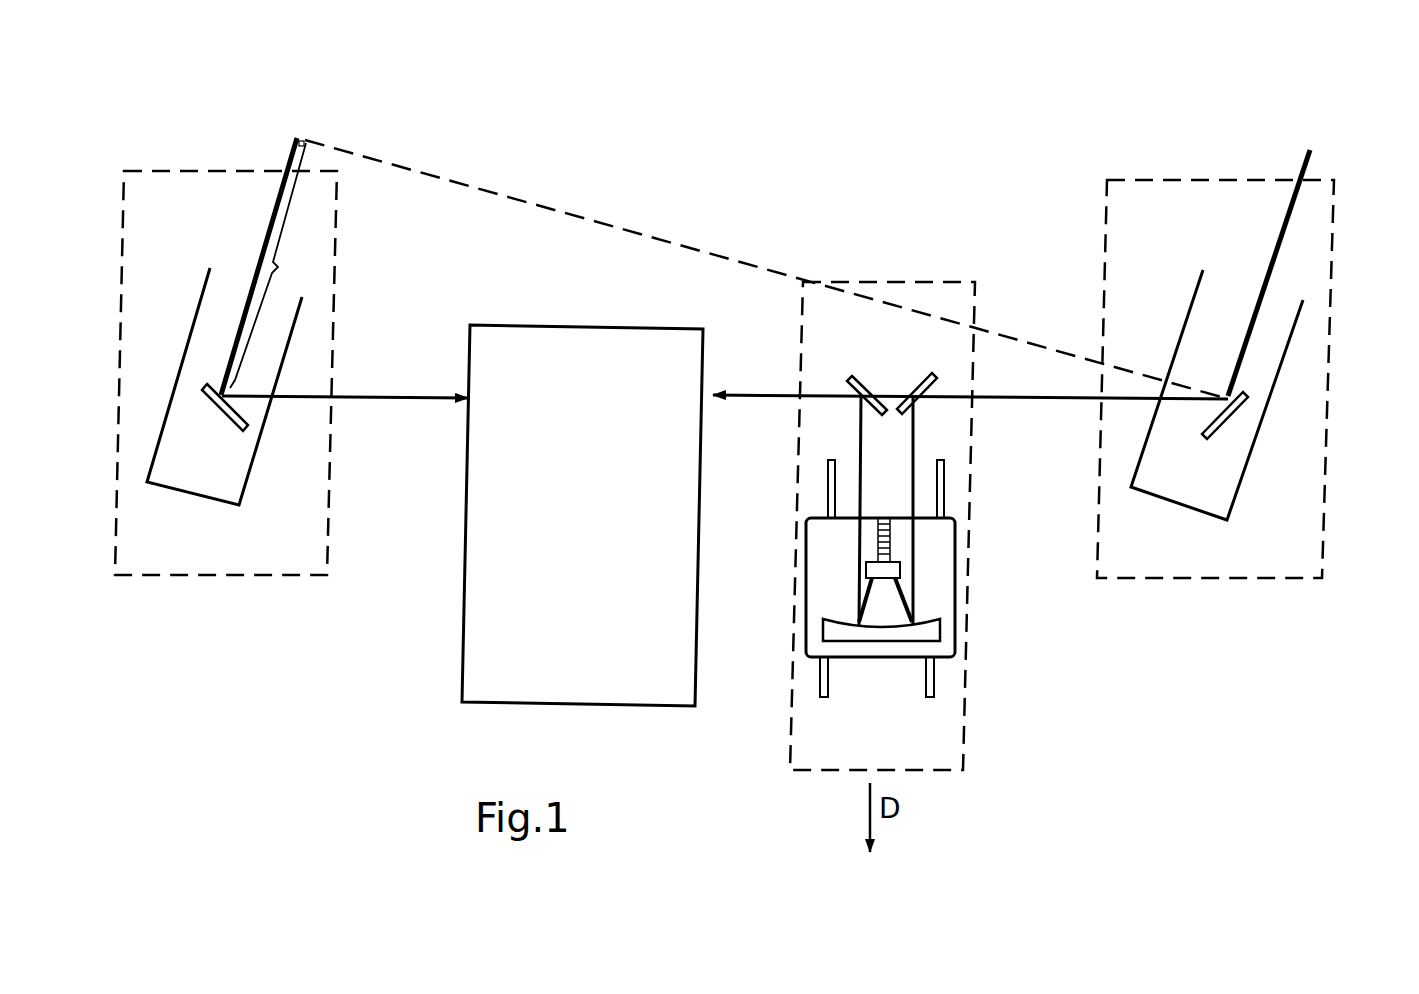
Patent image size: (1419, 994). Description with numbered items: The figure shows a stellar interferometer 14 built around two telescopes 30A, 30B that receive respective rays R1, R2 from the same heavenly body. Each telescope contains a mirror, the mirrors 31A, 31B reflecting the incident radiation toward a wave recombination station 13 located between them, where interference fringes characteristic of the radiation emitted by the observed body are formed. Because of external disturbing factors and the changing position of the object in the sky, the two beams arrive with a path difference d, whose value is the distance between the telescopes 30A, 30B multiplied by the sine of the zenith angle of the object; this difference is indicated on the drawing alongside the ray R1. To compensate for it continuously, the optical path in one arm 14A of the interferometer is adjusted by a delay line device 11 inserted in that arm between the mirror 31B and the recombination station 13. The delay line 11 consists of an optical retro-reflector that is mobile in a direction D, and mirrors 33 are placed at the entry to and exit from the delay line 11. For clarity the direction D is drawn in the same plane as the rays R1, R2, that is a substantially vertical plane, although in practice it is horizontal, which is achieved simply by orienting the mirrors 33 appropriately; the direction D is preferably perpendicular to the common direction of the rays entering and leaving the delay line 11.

The delay line device 11 is at (967, 713).
The wave recombination station 13 is at (551, 363).
The stellar interferometer 14 is at (874, 152).
The arm of the stellar interferometer 14A is at (1043, 403).
The telescope 30A is at (216, 580).
The telescope 30B is at (1172, 582).
The mirror 31A is at (250, 430).
The mirror 31B is at (1215, 422).
The mirrors 33 is at (900, 393).
The ray R1 is at (297, 142).
The ray R2 is at (1312, 158).
The path difference d is at (268, 265).